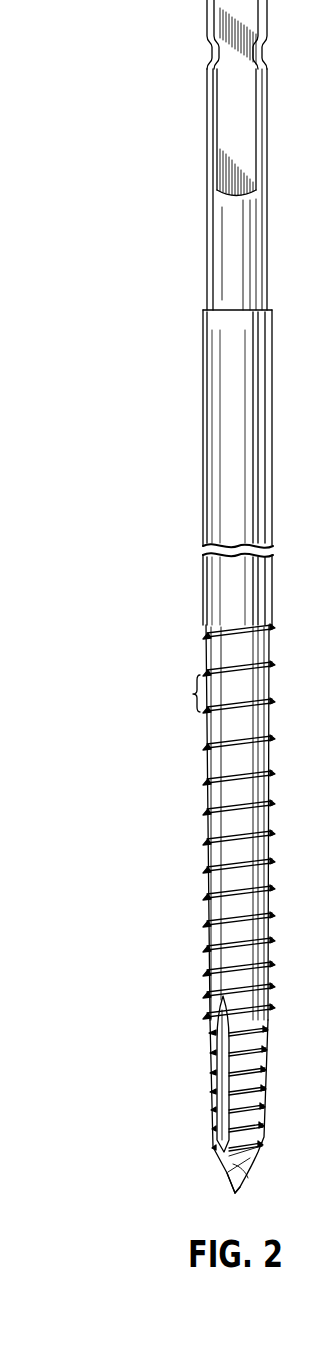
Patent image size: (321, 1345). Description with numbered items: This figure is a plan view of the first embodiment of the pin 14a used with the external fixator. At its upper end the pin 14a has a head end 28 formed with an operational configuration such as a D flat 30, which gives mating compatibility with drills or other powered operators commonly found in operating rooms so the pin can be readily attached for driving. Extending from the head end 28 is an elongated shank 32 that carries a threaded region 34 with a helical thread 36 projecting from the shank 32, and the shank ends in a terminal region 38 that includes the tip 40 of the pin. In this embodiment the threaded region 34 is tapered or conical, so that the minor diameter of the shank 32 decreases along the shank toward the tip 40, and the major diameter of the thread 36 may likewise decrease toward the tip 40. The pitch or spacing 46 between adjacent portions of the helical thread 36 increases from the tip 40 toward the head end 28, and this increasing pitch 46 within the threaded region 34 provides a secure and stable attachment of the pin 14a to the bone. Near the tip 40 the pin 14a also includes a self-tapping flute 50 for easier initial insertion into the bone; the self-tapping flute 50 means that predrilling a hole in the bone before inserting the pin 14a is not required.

The pin 14a is at (108, 208).
The head end 28 is at (207, 17).
The D flat 30 is at (225, 103).
The elongated shank 32 is at (204, 372).
The threaded region 34 is at (178, 790).
The helical thread 36 is at (272, 837).
The terminal region 38 is at (161, 1130).
The tip 40 is at (234, 1195).
The pitch 46 is at (193, 694).
The self-tapping flute 50 is at (226, 1082).